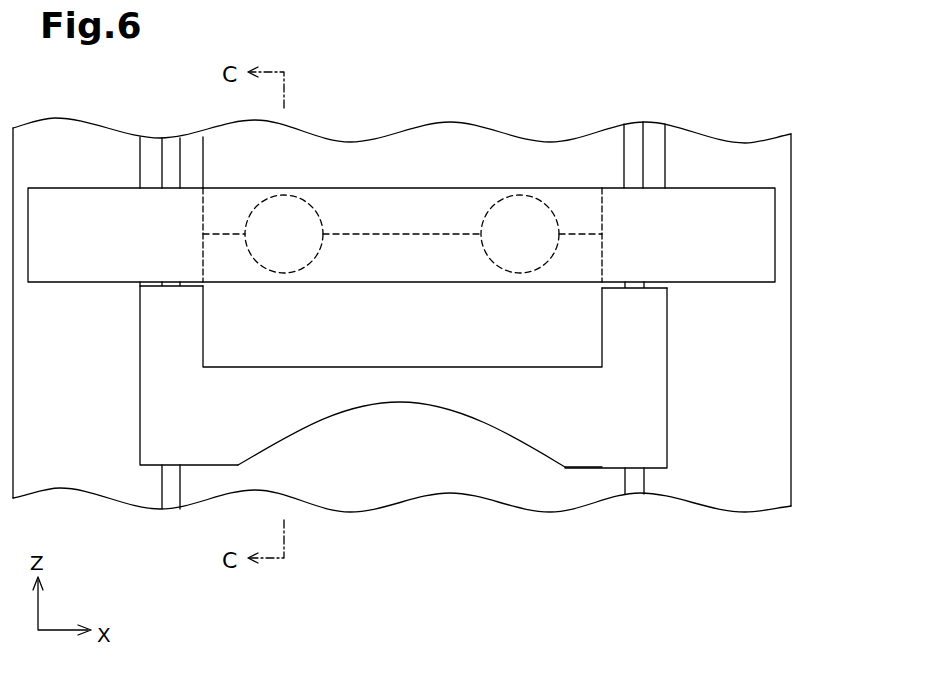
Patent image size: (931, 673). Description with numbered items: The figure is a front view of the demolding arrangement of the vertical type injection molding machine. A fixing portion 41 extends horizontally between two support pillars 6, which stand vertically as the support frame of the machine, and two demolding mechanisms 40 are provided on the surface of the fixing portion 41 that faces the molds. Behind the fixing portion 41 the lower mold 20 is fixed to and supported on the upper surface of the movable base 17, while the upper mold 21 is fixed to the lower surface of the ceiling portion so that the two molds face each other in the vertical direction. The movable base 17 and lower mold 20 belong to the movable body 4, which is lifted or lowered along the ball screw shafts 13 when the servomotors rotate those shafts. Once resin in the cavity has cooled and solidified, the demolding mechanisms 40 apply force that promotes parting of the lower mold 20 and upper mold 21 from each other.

The movable body 4 is at (380, 404).
The support pillar 6 is at (770, 373).
The ball screw shaft 13 is at (635, 156).
The movable base 17 is at (580, 452).
The lower mold 20 is at (262, 350).
The upper mold 21 is at (347, 155).
The demolding mechanism 40 is at (280, 170).
The fixing portion 41 is at (760, 243).